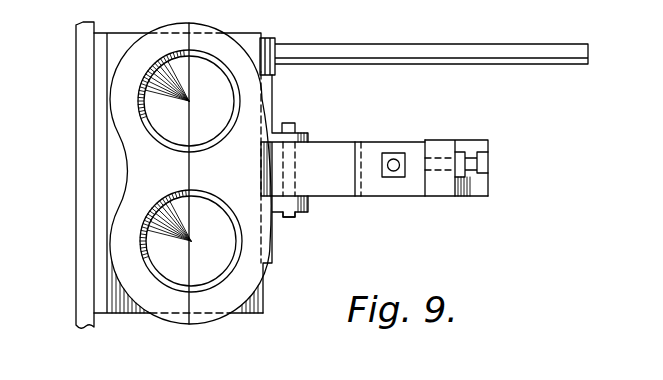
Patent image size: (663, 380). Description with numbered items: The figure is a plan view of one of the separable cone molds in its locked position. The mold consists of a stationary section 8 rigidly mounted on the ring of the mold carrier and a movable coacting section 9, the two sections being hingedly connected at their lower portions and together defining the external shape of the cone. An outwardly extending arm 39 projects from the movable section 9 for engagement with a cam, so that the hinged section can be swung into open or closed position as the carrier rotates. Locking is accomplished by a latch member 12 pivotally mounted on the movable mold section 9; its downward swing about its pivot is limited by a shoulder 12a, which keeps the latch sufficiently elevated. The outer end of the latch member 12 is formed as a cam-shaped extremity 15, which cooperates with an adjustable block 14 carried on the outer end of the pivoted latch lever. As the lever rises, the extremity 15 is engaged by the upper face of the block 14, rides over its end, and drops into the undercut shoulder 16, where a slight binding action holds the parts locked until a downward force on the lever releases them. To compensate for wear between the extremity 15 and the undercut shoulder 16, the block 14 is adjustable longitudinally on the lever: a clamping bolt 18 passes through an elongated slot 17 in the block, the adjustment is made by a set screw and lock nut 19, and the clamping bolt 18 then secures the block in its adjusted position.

The stationary section 8 is at (157, 287).
The movable coacting section 9 is at (248, 272).
The latch member 12 is at (337, 185).
The shoulder 12a is at (295, 202).
The adjustable block 14 is at (373, 150).
The cam-shaped extremity 15 is at (363, 180).
The undercut shoulder 16 is at (353, 147).
The elongated slot 17 is at (410, 148).
The clamping bolt 18 is at (395, 155).
The set screw and lock nut 19 is at (490, 158).
The outwardly extending arm 39 is at (495, 50).